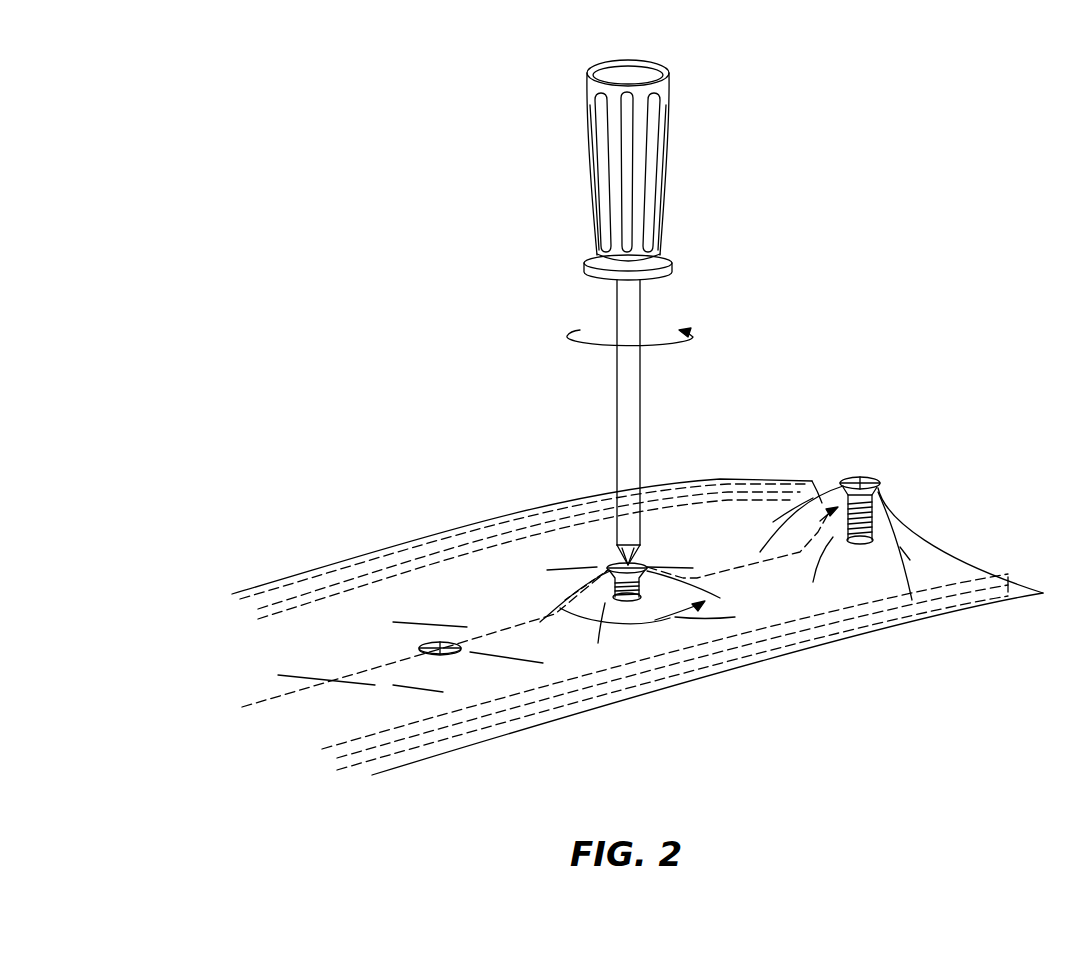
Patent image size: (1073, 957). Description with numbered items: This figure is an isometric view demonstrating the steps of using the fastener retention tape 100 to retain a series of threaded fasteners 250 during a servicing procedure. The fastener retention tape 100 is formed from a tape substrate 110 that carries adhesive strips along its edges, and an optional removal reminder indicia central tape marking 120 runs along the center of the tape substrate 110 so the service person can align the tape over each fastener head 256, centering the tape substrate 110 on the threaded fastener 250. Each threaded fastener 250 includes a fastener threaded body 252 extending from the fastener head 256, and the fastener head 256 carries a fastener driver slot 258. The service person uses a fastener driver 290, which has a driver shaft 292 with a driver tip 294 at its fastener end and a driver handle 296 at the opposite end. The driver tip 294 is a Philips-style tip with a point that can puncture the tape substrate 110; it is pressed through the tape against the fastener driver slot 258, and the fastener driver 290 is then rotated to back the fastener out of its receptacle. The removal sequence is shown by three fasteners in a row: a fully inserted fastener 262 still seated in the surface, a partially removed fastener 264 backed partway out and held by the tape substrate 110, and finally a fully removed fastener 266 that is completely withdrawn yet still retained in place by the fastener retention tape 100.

The fastener retention tape 100 is at (309, 503).
The tape substrate 110 is at (932, 568).
The removal reminder indicia central tape marking 120 is at (352, 675).
The threaded fastener 250 is at (811, 481).
The fastener threaded body 252 is at (878, 530).
The fastener head 256 is at (882, 492).
The fastener driver slot 258 is at (860, 477).
The fully inserted fastener 262 is at (466, 643).
The partially removed fastener 264 is at (643, 580).
The fully removed fastener 266 is at (876, 543).
The fastener driver 290 is at (528, 178).
The driver shaft 292 is at (630, 412).
The driver tip 294 is at (613, 558).
The driver handle 296 is at (653, 168).